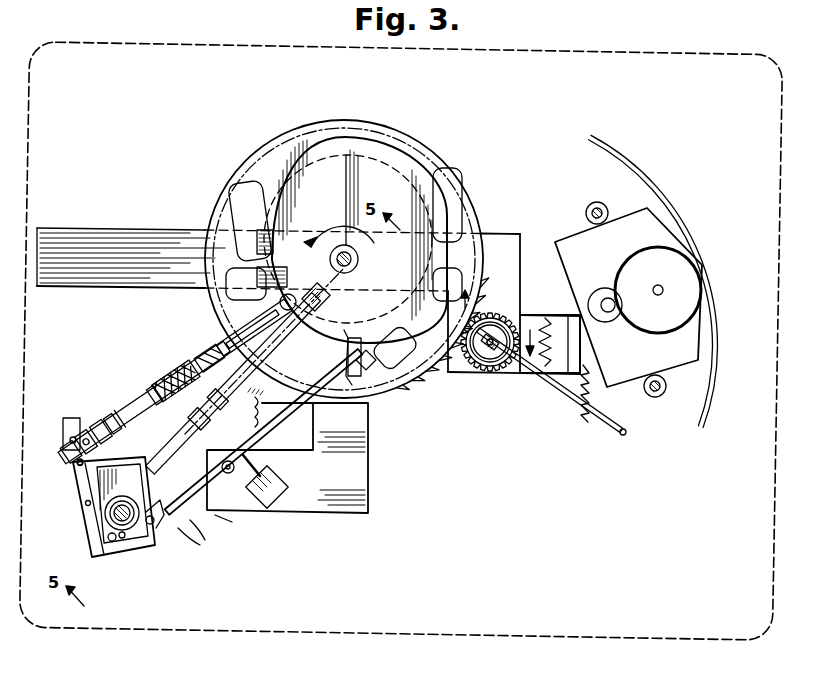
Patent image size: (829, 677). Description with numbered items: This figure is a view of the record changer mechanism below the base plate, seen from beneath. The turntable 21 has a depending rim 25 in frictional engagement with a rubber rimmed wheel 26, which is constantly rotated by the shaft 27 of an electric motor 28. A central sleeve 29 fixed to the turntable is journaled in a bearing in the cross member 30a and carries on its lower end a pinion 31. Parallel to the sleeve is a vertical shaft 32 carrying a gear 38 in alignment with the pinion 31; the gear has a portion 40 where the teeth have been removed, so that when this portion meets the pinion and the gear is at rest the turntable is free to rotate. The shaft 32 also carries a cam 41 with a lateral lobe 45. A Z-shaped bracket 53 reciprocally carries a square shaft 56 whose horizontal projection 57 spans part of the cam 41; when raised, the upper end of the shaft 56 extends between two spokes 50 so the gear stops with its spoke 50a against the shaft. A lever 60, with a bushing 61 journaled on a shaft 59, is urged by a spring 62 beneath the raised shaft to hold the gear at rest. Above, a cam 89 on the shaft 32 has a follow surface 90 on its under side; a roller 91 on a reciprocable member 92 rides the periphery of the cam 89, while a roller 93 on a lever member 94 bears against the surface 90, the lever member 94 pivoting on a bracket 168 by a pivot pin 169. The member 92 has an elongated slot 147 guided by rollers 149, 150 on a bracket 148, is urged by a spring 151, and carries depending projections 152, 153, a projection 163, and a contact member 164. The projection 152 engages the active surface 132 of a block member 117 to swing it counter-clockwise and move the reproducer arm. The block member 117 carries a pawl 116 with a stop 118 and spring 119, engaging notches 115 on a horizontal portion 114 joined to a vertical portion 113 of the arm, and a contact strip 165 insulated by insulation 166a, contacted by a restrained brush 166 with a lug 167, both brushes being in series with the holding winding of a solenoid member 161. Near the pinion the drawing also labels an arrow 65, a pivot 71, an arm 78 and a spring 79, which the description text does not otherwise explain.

The turntable 21 is at (645, 170).
The depending rim 25 is at (712, 358).
The rubber rimmed wheel 26 is at (660, 330).
The shaft 27 is at (606, 290).
The electric motor 28 is at (570, 250).
The central sleeve 29 is at (488, 318).
The cross member 30a is at (540, 313).
The pinion 31 is at (485, 366).
The vertical shaft 32 is at (358, 257).
The gear 38 is at (462, 190).
The portion where teeth have been removed 40 is at (452, 373).
The cam 41 is at (310, 330).
The lateral lobe 45 is at (283, 240).
The spokes 50 is at (246, 240).
The spoke 50a is at (325, 300).
The Z-shaped bracket 53 is at (372, 372).
The square shaft 56 is at (360, 380).
The horizontal projection 57 is at (362, 340).
The shaft 59 is at (229, 460).
The lever 60 is at (262, 412).
The bushing 61 is at (287, 458).
The spring 62 is at (274, 481).
The direction arrow 65 is at (529, 336).
The pivot 71 is at (498, 368).
The arm 78 is at (568, 392).
The spring 79 is at (598, 398).
The cam 89 is at (418, 125).
The follow surface 90 is at (400, 200).
The roller 91 is at (339, 249).
The reciprocable member 92 is at (155, 380).
The roller 93 is at (330, 290).
The lever member 94 is at (242, 372).
The portion 113 is at (237, 526).
The horizontal portion 114 is at (209, 531).
The notches 115 is at (199, 545).
The pawl 116 is at (198, 452).
The block member 117 is at (70, 526).
The stop 118 is at (150, 530).
The spring 119 is at (160, 535).
The active surface 132 is at (76, 466).
The elongated slot 147 is at (204, 345).
The bracket 148 is at (190, 338).
The roller 149 is at (198, 374).
The roller 150 is at (172, 382).
The spring 151 is at (215, 335).
The depending projection 152 is at (125, 395).
The depending projection 153 is at (62, 428).
The solenoid member 161 is at (122, 425).
The projection 163 is at (95, 428).
The contact member 164 is at (110, 418).
The contact strip 165 is at (82, 490).
The restrained brush 166 is at (112, 545).
The insulation 166a is at (75, 418).
The lug 167 is at (128, 530).
The bracket 168 is at (195, 422).
The pivot pin 169 is at (248, 396).